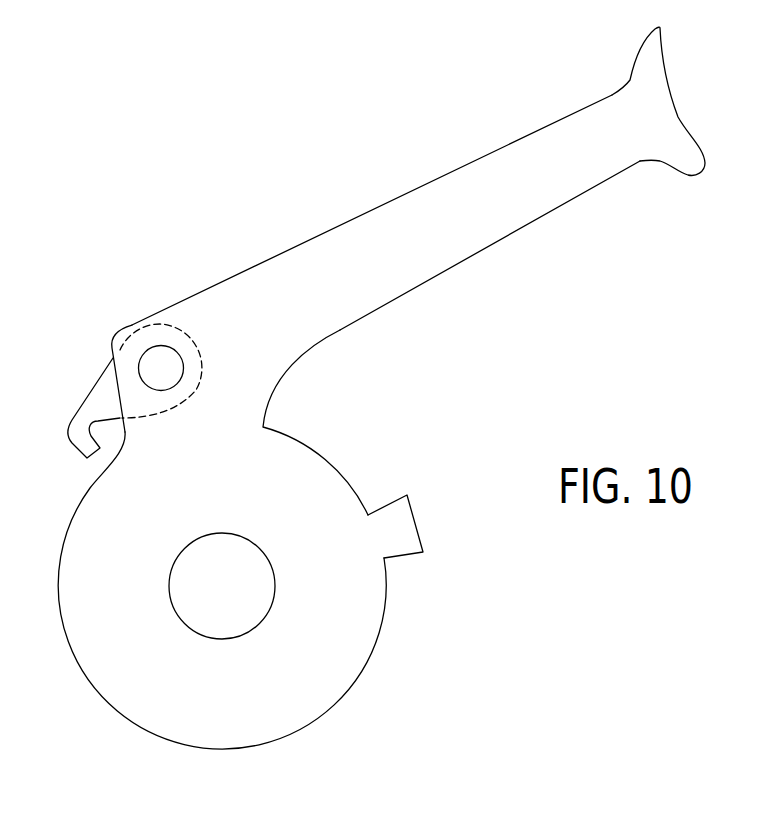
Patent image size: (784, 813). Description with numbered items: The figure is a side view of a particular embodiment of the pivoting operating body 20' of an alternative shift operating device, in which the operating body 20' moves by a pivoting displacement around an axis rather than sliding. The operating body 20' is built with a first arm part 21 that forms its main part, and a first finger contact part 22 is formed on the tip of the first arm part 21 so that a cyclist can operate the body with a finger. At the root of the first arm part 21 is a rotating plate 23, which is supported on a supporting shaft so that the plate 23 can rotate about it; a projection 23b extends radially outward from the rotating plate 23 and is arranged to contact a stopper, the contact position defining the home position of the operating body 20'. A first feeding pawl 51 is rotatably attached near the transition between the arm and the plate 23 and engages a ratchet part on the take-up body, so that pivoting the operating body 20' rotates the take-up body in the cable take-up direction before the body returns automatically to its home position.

The operating body 20' is at (378, 388).
The first arm part 21 is at (340, 223).
The first finger contact part 22 is at (682, 120).
The rotating plate 23 is at (312, 470).
The projection 23b is at (412, 538).
The first feeding pawl 51 is at (72, 443).